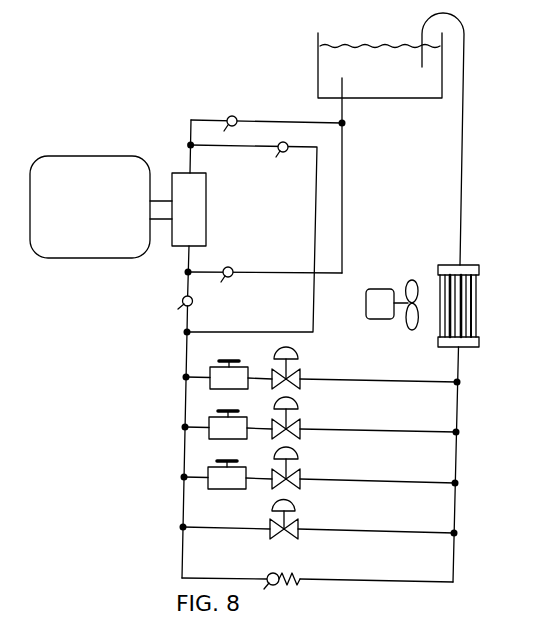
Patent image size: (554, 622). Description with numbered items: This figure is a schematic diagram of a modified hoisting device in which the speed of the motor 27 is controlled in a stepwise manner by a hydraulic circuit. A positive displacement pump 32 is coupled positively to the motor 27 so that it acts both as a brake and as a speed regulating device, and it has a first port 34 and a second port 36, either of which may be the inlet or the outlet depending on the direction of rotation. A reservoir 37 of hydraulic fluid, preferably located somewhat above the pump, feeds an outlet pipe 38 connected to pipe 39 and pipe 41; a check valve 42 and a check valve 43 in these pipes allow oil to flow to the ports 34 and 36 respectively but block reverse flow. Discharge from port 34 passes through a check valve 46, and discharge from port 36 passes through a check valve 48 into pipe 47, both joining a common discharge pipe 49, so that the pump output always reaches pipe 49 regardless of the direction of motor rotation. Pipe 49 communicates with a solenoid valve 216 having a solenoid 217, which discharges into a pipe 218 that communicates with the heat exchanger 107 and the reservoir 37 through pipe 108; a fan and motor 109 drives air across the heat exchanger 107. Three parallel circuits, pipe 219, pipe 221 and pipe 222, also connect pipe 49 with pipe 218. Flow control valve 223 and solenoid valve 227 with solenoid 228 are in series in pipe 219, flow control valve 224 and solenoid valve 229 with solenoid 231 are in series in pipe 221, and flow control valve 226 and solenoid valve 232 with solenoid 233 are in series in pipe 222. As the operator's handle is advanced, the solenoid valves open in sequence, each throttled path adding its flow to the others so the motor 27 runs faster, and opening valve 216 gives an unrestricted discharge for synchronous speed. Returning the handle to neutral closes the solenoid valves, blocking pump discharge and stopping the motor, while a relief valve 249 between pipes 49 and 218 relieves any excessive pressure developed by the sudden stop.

The motor 27 is at (90, 207).
The positive displacement pump 32 is at (199, 214).
The first port 34 is at (189, 166).
The second port 36 is at (188, 252).
The reservoir 37 is at (366, 82).
The outlet pipe 38 is at (344, 108).
The pipe 39 is at (257, 118).
The pipe 41 is at (316, 207).
The check valve 42 is at (229, 116).
The check valve 43 is at (228, 266).
The check valve 46 is at (282, 154).
The pipe 47 is at (186, 313).
The check valve 48 is at (193, 301).
The common discharge pipe 49 is at (185, 347).
The heat exchanger 107 is at (480, 303).
The pipe 108 is at (466, 130).
The fan and motor 109 is at (378, 289).
The solenoid valve 216 is at (297, 535).
The solenoid 217 is at (296, 507).
The pipe 218 is at (460, 428).
The pipe 219 is at (389, 383).
The pipe 221 is at (389, 433).
The pipe 222 is at (390, 482).
The flow control valve 223 is at (215, 382).
The flow control valve 224 is at (212, 432).
The flow control valve 226 is at (210, 482).
The solenoid valve 227 is at (302, 378).
The solenoid 228 is at (298, 357).
The solenoid valve 229 is at (302, 428).
The solenoid 231 is at (298, 407).
The solenoid valve 232 is at (302, 478).
The solenoid 233 is at (298, 457).
The relief valve 249 is at (292, 589).